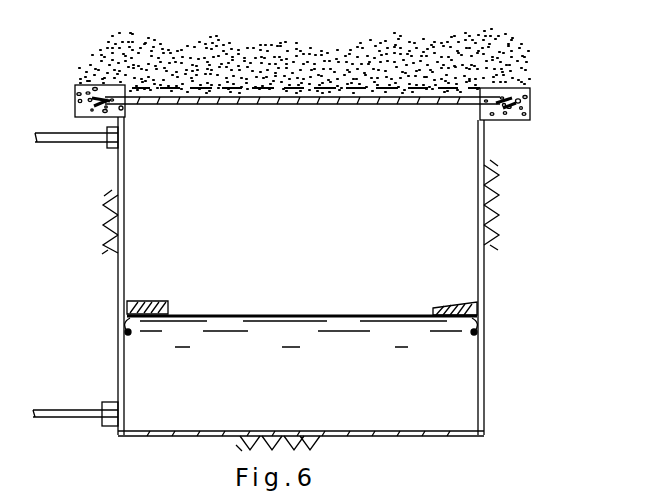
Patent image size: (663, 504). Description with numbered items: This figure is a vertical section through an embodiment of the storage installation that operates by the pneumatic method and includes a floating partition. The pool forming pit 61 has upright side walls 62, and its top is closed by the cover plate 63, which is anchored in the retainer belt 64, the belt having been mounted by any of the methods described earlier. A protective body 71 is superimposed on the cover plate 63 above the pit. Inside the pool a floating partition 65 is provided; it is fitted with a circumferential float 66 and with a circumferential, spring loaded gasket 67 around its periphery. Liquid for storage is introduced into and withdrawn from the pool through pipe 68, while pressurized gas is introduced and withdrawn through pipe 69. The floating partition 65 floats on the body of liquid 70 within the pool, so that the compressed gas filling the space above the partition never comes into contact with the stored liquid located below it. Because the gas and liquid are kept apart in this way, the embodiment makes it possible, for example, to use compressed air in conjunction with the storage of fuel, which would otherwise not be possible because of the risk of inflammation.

The pool forming pit 61 is at (448, 265).
The upright side walls 62 is at (487, 380).
The cover plate 63 is at (355, 104).
The retainer belt 64 is at (530, 110).
The floating partition 65 is at (283, 313).
The circumferential float 66 is at (165, 291).
The circumferential spring loaded gasket 67 is at (129, 336).
The pipe 68 is at (75, 408).
The pipe 69 is at (72, 130).
The body of liquid 70 is at (420, 413).
The protective body 71 is at (493, 57).